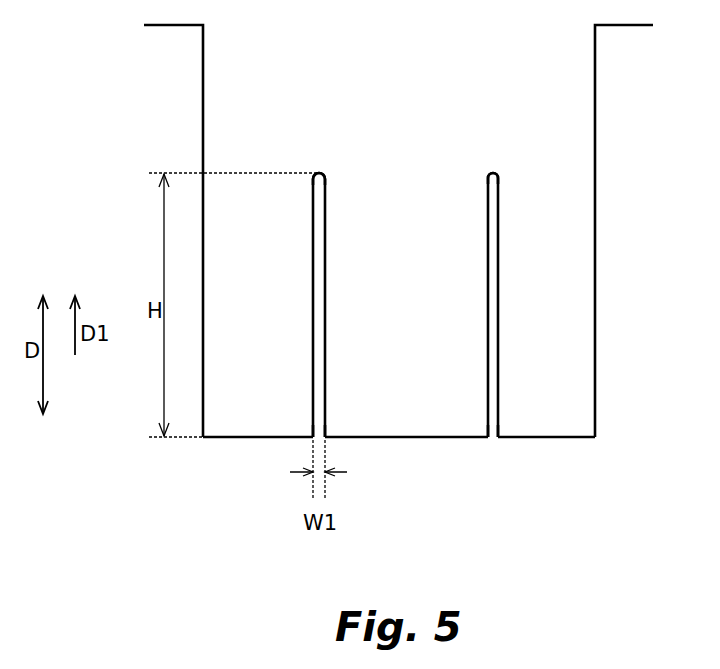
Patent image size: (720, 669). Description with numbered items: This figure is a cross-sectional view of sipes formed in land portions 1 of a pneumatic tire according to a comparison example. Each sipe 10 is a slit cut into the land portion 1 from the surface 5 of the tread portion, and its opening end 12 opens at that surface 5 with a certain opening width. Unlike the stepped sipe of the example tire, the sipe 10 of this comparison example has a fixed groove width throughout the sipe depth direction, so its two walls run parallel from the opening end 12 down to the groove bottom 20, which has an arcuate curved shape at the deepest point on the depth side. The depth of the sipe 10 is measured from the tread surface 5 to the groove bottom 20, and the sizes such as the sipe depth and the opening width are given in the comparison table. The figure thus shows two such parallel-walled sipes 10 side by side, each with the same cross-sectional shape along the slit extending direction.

The land portion 1 is at (577, 80).
The surface of a tread portion 5 is at (555, 440).
The sipe 10 is at (307, 224).
The opening end 12 is at (313, 440).
The groove bottom 20 is at (320, 173).